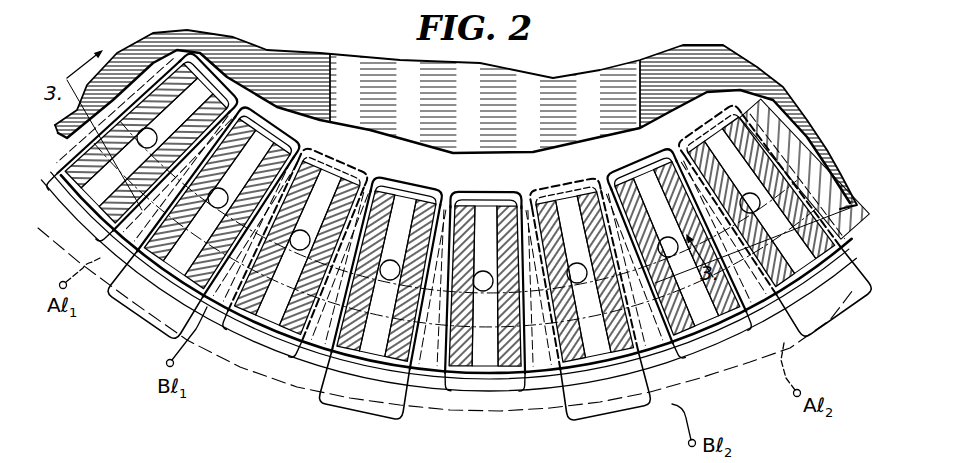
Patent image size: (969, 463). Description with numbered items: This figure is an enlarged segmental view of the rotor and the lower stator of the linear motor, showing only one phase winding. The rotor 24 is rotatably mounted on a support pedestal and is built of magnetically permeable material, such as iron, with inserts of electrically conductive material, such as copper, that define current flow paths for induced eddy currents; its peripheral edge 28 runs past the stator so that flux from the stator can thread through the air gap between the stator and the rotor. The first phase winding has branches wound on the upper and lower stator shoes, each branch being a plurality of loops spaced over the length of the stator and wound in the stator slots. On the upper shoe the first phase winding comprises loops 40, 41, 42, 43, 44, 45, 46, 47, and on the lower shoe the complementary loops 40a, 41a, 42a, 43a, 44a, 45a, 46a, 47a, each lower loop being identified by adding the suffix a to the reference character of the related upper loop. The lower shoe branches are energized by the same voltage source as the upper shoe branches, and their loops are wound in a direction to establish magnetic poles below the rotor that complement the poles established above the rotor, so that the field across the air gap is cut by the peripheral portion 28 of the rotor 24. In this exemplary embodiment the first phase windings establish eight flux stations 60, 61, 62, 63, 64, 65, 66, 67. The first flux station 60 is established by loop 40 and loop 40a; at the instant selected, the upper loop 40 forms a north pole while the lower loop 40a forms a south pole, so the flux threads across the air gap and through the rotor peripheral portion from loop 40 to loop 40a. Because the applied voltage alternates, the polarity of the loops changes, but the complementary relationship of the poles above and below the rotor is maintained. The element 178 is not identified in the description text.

The rotor 24 is at (563, 70).
The peripheral edge of the rotor 28 is at (738, 83).
The loop 40 is at (164, 257).
The loop 41 is at (244, 286).
The loop 42 is at (331, 308).
The loop 43 is at (423, 325).
The loop 44 is at (522, 334).
The loop 45 is at (588, 306).
The loop 46 is at (679, 259).
The loop 47 is at (776, 224).
The loop 40a is at (217, 68).
The loop 41a is at (280, 103).
The loop 42a is at (334, 151).
The loop 43a is at (409, 190).
The loop 44a is at (485, 192).
The loop 45a is at (588, 178).
The loop 46a is at (660, 165).
The loop 47a is at (727, 126).
The flux station 60 is at (153, 131).
The flux station 61 is at (224, 190).
The flux station 62 is at (296, 250).
The flux station 63 is at (388, 280).
The flux station 64 is at (483, 291).
The flux station 65 is at (578, 283).
The flux station 66 is at (669, 257).
The flux station 67 is at (752, 213).
The lamination 178 is at (318, 452).